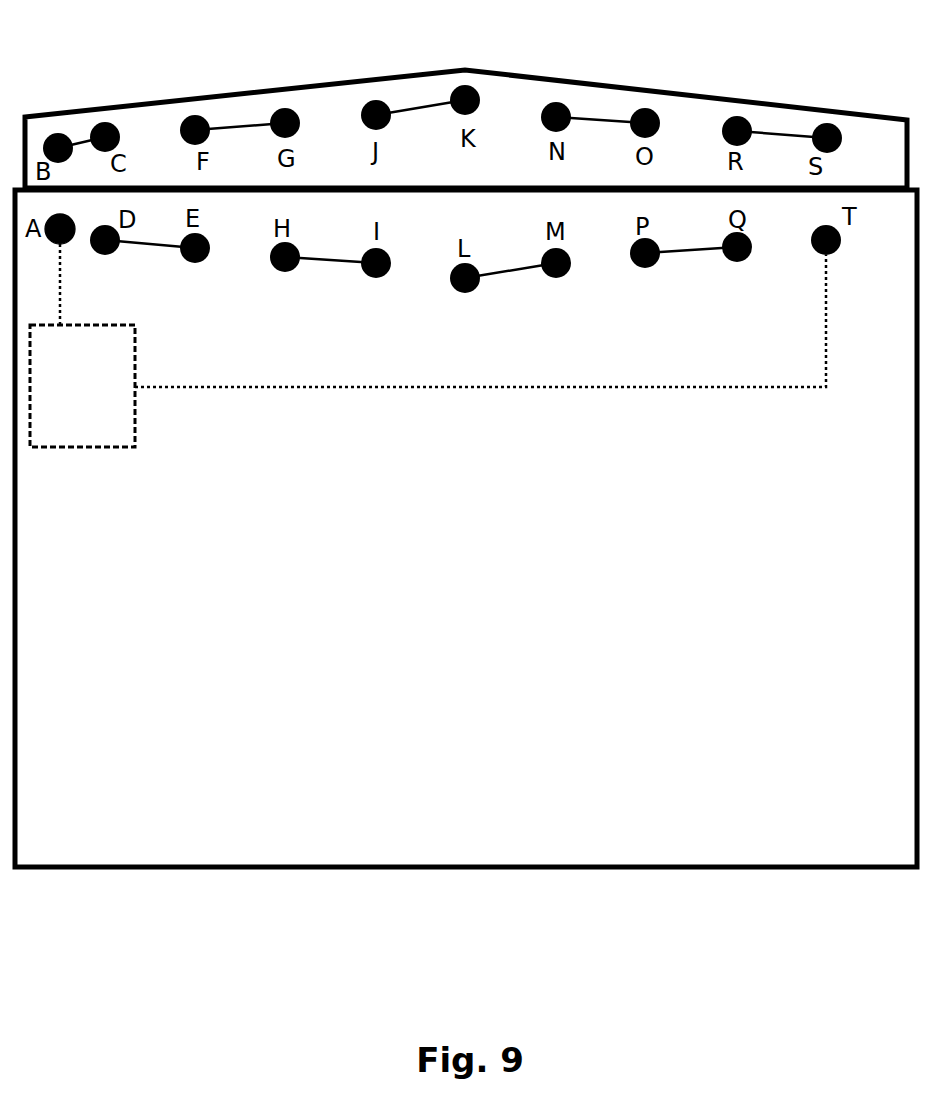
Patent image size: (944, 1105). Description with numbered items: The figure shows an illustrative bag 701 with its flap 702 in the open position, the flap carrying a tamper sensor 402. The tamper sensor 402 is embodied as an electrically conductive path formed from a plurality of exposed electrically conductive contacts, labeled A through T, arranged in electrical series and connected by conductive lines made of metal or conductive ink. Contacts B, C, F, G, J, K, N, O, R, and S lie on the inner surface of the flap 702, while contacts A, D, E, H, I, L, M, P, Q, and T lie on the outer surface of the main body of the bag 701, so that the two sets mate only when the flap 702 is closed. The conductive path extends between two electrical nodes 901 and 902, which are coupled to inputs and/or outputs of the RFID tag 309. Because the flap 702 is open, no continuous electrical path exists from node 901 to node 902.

The bag 701 is at (466, 528).
The flap 702 is at (235, 108).
The tamper sensor 402 is at (509, 245).
The electrical node 901 is at (62, 297).
The electrical node 902 is at (208, 390).
The RFID tag 309 is at (82, 386).